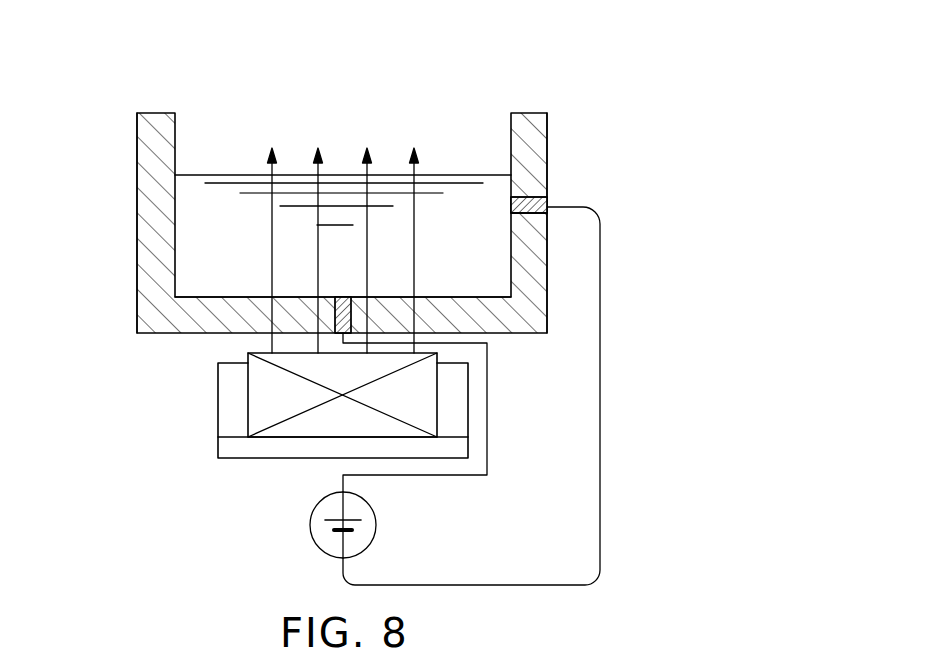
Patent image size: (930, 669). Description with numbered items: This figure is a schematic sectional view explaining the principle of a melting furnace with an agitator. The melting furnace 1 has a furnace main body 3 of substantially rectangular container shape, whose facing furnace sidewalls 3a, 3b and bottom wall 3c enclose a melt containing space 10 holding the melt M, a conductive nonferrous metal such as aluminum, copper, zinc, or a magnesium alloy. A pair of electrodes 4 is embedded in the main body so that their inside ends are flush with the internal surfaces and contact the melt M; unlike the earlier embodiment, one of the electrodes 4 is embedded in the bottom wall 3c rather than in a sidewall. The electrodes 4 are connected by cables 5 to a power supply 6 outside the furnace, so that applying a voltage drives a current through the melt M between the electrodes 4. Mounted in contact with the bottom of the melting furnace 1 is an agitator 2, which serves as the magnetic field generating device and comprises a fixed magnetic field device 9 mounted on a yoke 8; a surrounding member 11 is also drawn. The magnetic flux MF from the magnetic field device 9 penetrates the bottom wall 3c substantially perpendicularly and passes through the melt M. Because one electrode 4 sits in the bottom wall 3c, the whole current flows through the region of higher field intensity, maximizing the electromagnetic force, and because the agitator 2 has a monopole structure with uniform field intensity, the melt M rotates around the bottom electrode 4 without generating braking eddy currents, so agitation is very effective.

The melting furnace 1 is at (547, 97).
The agitator 2 is at (522, 418).
The furnace main body 3 is at (535, 150).
The furnace sidewall 3a is at (535, 189).
The furnace sidewall 3b is at (150, 168).
The bottom wall 3c is at (222, 297).
The electrode 4 is at (345, 297).
The cable 5 is at (487, 372).
The power supply 6 is at (376, 525).
The yoke 8 is at (228, 447).
The magnetic field device 9 is at (268, 379).
The melt containing space 10 is at (512, 210).
The yoke 11 is at (228, 401).
The melt M is at (456, 197).
The magnetic flux MF is at (423, 132).